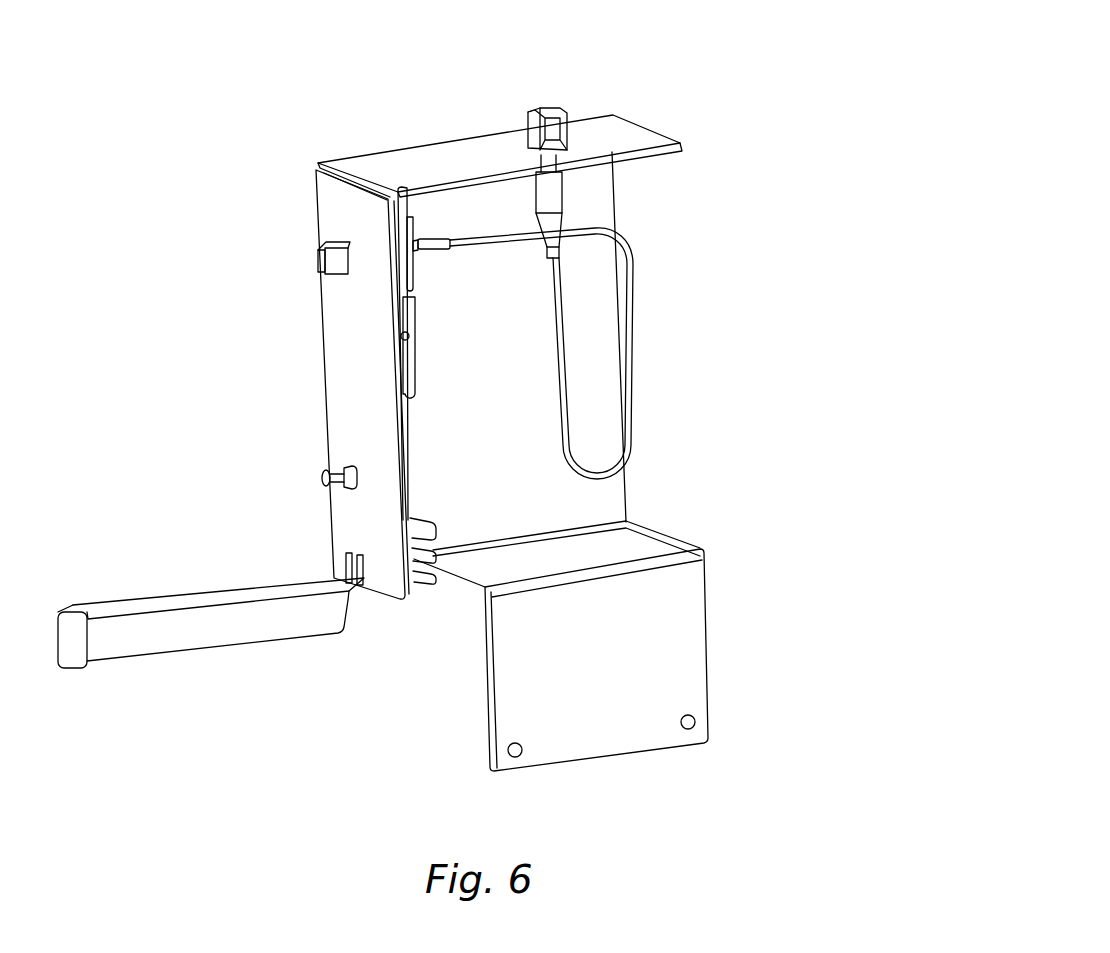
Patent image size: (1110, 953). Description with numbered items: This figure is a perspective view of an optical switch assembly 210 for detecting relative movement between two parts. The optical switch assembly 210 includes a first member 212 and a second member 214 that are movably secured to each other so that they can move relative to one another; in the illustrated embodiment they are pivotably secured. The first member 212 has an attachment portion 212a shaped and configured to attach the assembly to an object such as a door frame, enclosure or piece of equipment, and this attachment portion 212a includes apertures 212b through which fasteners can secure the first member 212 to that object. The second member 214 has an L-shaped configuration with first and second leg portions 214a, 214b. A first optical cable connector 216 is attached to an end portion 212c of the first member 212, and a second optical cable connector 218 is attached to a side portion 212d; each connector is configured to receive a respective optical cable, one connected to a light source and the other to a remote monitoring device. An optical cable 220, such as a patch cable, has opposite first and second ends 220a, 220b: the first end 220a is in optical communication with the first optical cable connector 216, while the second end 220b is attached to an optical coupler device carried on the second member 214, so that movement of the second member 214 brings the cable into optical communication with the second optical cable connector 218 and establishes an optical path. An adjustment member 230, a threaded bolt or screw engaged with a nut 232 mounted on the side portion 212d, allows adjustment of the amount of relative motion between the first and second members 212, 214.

The optical switch assembly 210 is at (676, 96).
The first member 212 is at (608, 487).
The attachment portion 212a is at (674, 632).
The apertures 212b is at (514, 762).
The end portion 212c is at (412, 163).
The side portion 212d is at (338, 350).
The second member 214 is at (141, 597).
The first leg portion 214a is at (410, 297).
The second leg portion 214b is at (154, 636).
The first optical cable connector 216 is at (560, 117).
The second optical cable connector 218 is at (334, 268).
The optical cable 220 is at (633, 295).
The optical cable first end 220a is at (557, 224).
The optical cable second end 220b is at (426, 250).
The adjustment member 230 is at (320, 478).
The nut 232 is at (352, 486).